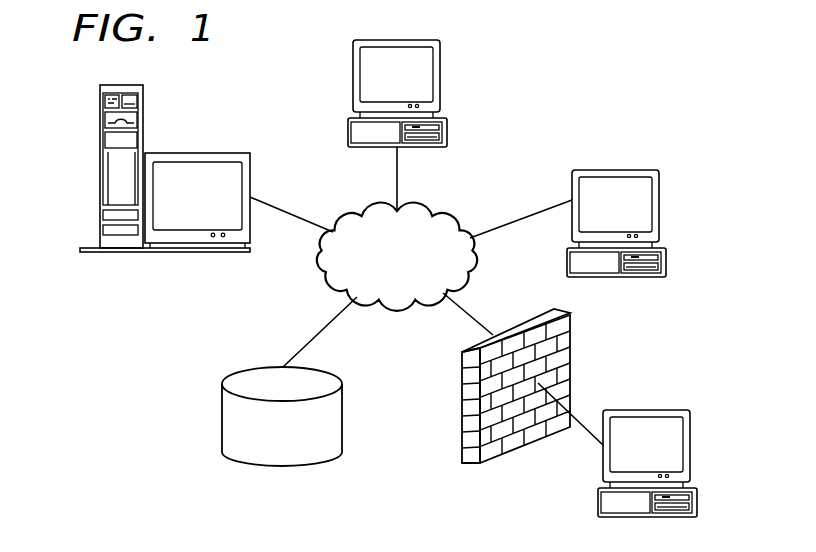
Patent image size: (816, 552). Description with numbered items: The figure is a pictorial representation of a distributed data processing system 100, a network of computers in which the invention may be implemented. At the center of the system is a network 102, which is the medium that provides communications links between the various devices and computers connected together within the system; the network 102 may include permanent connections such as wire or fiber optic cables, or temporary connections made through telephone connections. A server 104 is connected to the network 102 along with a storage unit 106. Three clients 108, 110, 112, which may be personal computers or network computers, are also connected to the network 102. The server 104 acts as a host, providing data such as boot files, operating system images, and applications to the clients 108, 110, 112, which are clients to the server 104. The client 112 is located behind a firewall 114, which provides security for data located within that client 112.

The distributed data processing system 100 is at (576, 64).
The network 102 is at (428, 210).
The server 104 is at (198, 153).
The storage unit 106 is at (222, 415).
The client 108 is at (443, 78).
The client 110 is at (658, 207).
The client 112 is at (690, 450).
The firewall 114 is at (462, 408).